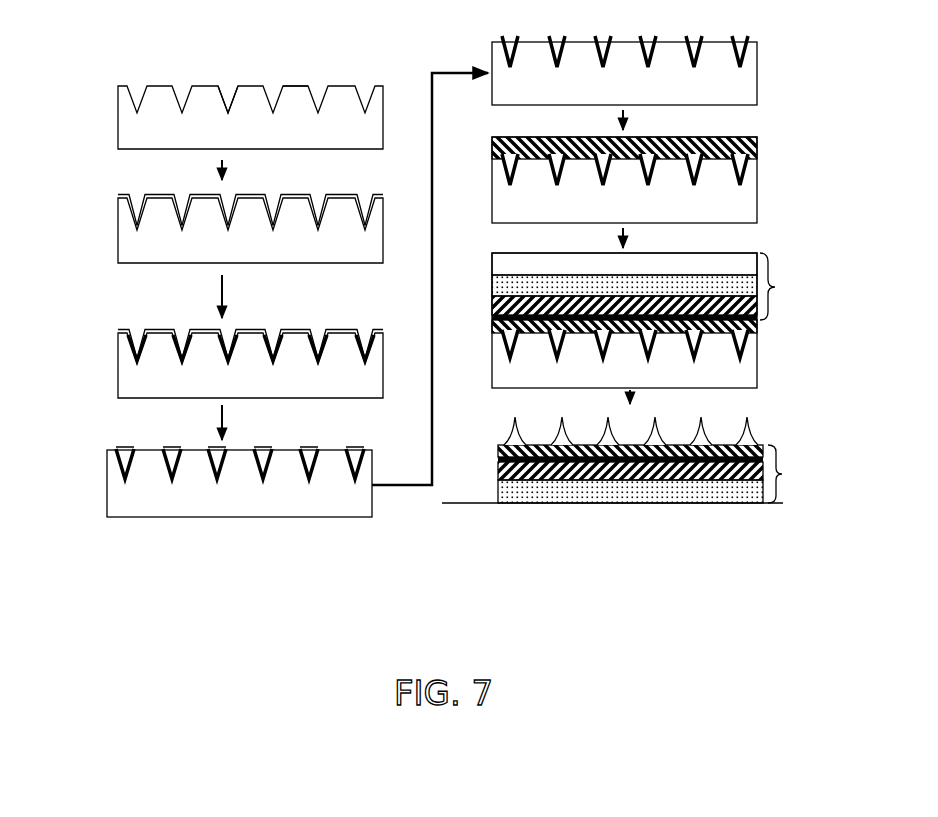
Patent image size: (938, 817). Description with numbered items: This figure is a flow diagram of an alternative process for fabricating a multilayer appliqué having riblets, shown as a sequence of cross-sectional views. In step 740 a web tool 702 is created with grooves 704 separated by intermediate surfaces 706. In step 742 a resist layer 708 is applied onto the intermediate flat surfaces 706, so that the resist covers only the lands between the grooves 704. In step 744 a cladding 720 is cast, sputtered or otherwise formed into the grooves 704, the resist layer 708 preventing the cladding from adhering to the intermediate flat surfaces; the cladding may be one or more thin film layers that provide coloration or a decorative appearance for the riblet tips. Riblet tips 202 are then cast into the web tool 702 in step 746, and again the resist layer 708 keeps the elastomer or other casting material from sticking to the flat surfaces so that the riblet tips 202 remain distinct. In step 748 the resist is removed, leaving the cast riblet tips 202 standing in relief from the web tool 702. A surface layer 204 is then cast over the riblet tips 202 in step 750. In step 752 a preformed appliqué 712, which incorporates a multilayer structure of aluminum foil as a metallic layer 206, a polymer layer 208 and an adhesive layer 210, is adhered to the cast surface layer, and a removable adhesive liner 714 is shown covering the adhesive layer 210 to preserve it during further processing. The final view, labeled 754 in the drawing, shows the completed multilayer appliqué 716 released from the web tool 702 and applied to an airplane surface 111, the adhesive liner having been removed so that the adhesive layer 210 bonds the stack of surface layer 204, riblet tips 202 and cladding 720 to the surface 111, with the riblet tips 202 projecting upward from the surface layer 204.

The step 740 is at (212, 98).
The step 742 is at (214, 215).
The step 744 is at (215, 348).
The step 746 is at (204, 480).
The step 748 is at (523, 96).
The step 750 is at (535, 212).
The step 752 is at (661, 307).
The finished microneedle patch step 754 is at (657, 453).
The web tool 702 is at (156, 147).
The grooves 704 is at (228, 85).
The intermediate surfaces 706 is at (292, 85).
The resist layer 708 is at (247, 197).
The cladding 720 is at (180, 341).
The riblet tips 202 is at (309, 473).
The surface layer 204 is at (630, 444).
The metallic layer 206 is at (492, 317).
The polymer layer 208 is at (492, 303).
The adhesive layer 210 is at (492, 283).
The airplane surface 111 is at (473, 501).
The preformed appliqué 712 is at (780, 286).
The removable adhesive liner 714 is at (703, 253).
The multilayer appliqué 716 is at (783, 473).